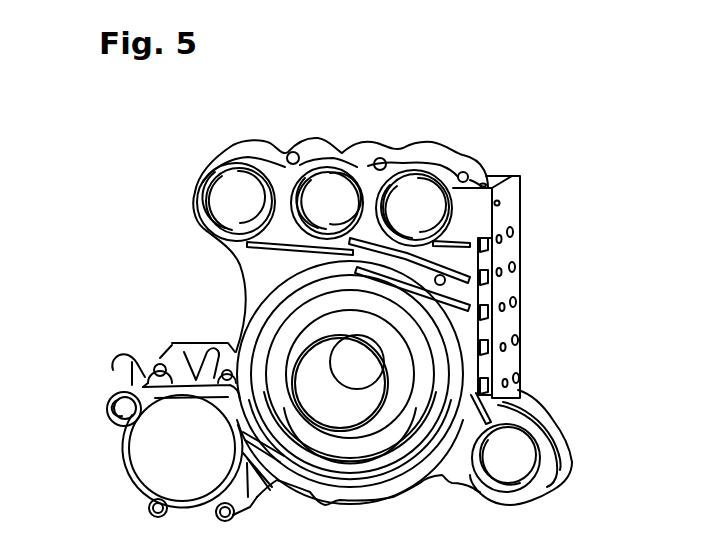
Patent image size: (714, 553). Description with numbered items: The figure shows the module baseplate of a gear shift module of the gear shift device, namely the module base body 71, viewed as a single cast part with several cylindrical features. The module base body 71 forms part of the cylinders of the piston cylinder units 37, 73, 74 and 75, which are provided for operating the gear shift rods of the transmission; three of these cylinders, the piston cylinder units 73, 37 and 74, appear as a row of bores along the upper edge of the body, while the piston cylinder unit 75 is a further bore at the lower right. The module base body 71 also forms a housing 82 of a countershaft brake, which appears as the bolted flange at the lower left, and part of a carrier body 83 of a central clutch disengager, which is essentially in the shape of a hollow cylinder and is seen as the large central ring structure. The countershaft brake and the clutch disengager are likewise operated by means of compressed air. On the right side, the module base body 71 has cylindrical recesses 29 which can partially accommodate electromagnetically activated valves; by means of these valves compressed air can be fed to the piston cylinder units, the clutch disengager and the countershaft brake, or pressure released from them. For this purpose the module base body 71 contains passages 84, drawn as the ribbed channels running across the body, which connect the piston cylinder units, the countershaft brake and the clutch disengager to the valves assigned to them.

The module base body 71 is at (382, 326).
The piston cylinder unit 73 is at (233, 204).
The piston cylinder unit 37 is at (332, 190).
The piston cylinder unit 74 is at (422, 198).
The passages 84 is at (252, 248).
The carrier body 83 is at (313, 368).
The cylindrical recesses 29 is at (516, 377).
The piston cylinder unit 75 is at (524, 456).
The housing 82 is at (153, 461).